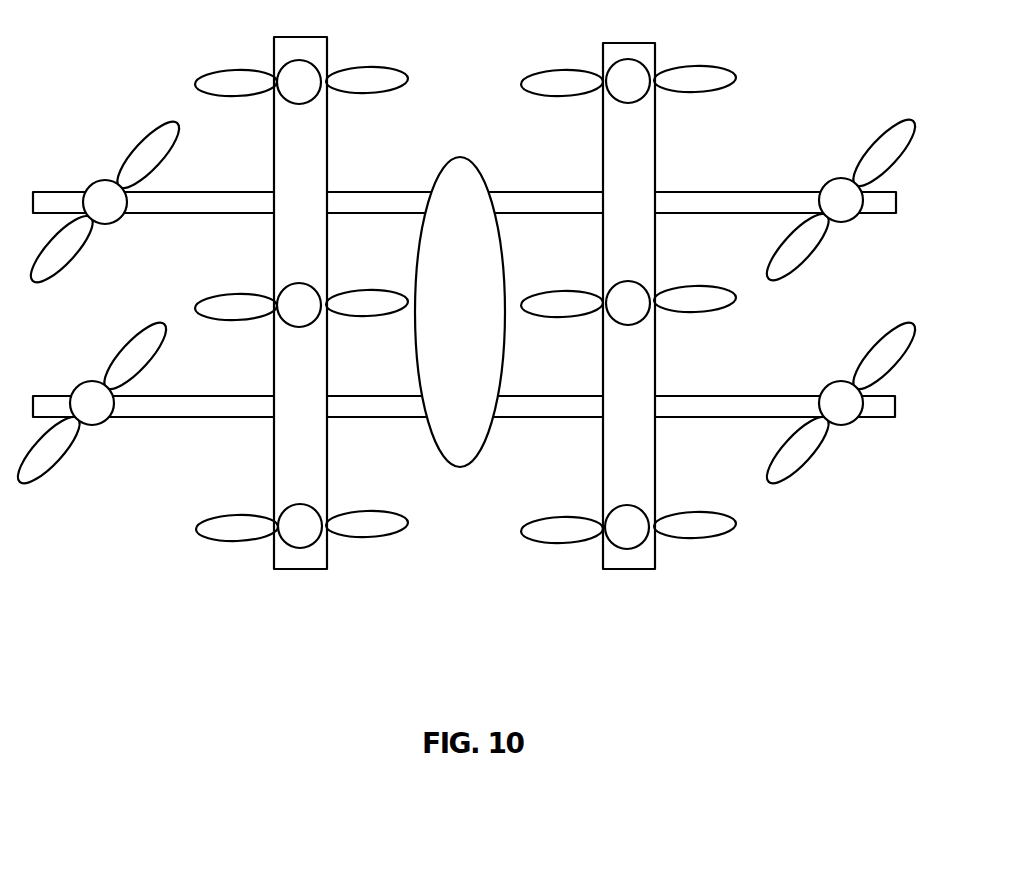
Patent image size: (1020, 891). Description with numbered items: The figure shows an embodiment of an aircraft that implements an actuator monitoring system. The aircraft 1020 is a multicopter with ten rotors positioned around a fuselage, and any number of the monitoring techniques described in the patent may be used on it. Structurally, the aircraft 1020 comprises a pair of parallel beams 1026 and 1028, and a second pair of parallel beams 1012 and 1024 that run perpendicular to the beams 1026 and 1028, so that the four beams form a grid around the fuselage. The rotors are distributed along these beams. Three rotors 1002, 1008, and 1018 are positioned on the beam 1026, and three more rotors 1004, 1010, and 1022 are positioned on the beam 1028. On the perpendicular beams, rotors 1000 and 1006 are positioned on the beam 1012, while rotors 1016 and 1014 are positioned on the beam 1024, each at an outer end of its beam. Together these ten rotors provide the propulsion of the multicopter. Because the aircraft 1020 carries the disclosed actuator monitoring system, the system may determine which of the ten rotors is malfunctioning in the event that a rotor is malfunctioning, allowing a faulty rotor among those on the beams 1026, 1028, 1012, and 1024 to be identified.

The rotor 1000 is at (148, 135).
The rotor 1002 is at (238, 68).
The rotor 1004 is at (563, 66).
The rotor 1006 is at (890, 128).
The rotor 1008 is at (238, 293).
The rotor 1010 is at (597, 293).
The beam 1012 is at (885, 214).
The rotor 1014 is at (887, 337).
The rotor 1016 is at (47, 472).
The rotor 1018 is at (238, 515).
The aircraft 1020 is at (460, 470).
The rotor 1022 is at (587, 517).
The beam 1024 is at (885, 420).
The beam 1026 is at (300, 570).
The beam 1028 is at (627, 570).